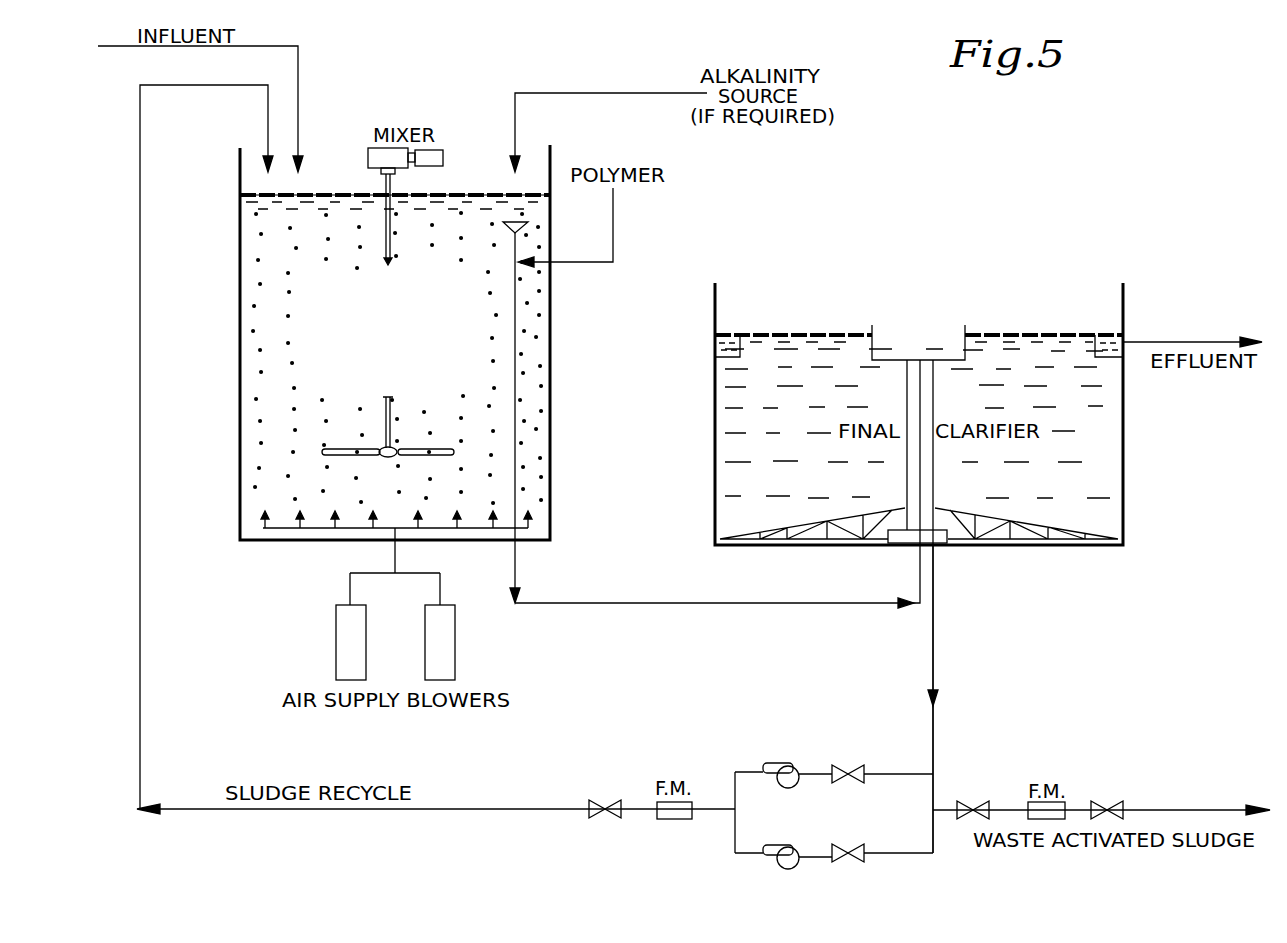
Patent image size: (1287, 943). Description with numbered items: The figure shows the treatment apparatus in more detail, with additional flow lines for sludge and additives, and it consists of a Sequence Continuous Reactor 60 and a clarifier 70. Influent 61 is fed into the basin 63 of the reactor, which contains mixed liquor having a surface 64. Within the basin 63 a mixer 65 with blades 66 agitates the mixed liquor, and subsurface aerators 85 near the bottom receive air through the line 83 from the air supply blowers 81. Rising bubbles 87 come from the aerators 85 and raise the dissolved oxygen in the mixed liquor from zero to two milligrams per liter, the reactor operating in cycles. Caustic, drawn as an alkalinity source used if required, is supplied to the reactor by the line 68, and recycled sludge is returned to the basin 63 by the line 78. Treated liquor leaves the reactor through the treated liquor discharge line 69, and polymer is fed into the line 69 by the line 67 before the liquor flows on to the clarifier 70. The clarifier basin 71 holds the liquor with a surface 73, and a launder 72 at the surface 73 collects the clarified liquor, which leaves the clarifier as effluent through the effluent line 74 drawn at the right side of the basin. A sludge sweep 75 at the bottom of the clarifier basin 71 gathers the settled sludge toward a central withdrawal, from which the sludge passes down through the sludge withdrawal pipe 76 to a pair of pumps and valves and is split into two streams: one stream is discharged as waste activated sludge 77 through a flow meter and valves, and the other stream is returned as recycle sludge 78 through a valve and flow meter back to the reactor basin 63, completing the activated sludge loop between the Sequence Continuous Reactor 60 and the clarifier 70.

The Sequence Continuous Reactor 60 is at (452, 78).
The influent 61 is at (300, 76).
The basin 63 is at (240, 170).
The surface 64 is at (318, 192).
The mixer 65 is at (445, 158).
The blades 66 is at (348, 459).
The polymer line 67 is at (614, 243).
The caustic line 68 is at (572, 92).
The treated liquor discharge line 69 is at (517, 328).
The clarifier 70 is at (1022, 290).
The clarifier basin 71 is at (1125, 456).
The launder 72 is at (724, 332).
The surface 73 is at (814, 332).
The effluent line 74 is at (1157, 341).
The sludge sweep 75 is at (965, 514).
The sludge withdrawal pipe 76 is at (935, 650).
The waste activated sludge 77 is at (1006, 810).
The recycle sludge line 78 is at (140, 157).
The air supply blowers 81 is at (425, 640).
The air line 83 is at (393, 558).
The subsurface aerators 85 is at (318, 533).
The rising bubbles 87 is at (482, 494).